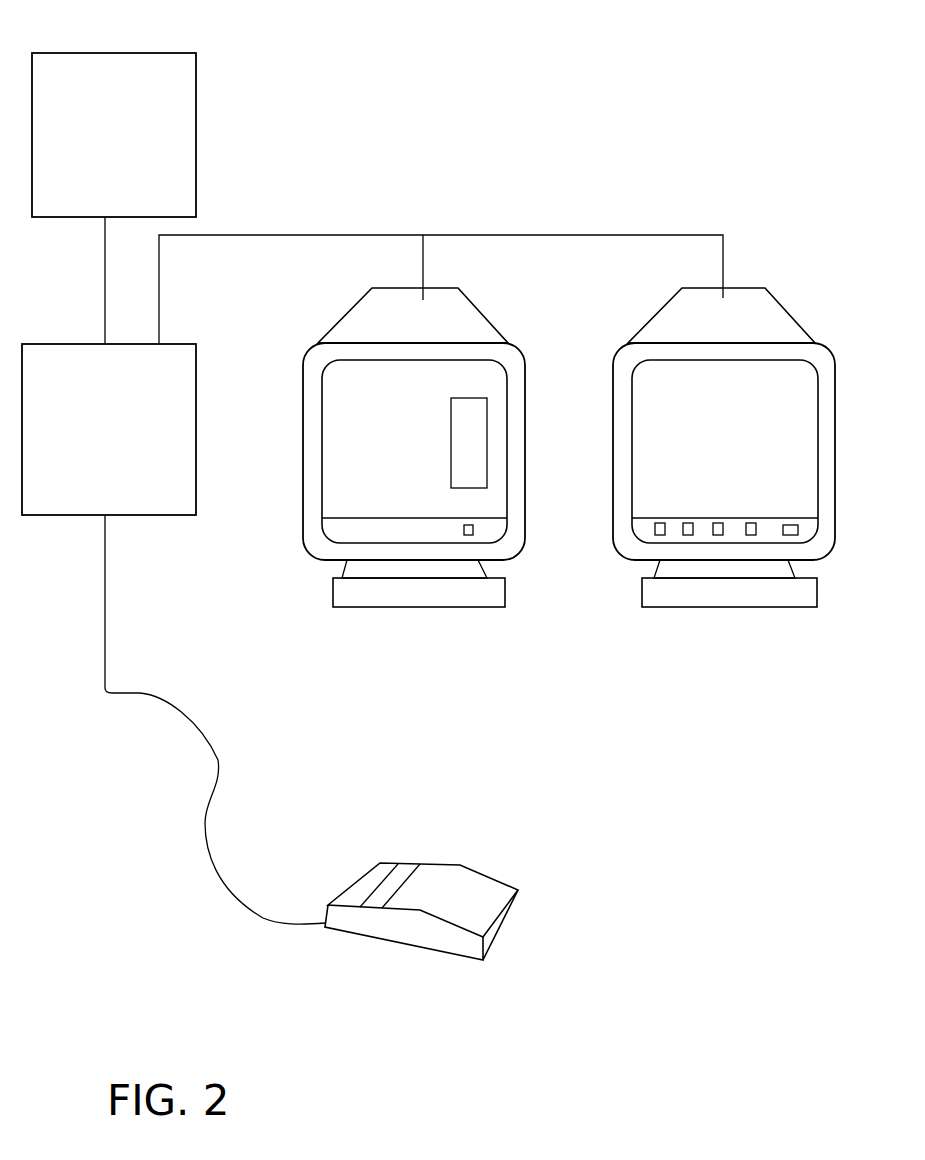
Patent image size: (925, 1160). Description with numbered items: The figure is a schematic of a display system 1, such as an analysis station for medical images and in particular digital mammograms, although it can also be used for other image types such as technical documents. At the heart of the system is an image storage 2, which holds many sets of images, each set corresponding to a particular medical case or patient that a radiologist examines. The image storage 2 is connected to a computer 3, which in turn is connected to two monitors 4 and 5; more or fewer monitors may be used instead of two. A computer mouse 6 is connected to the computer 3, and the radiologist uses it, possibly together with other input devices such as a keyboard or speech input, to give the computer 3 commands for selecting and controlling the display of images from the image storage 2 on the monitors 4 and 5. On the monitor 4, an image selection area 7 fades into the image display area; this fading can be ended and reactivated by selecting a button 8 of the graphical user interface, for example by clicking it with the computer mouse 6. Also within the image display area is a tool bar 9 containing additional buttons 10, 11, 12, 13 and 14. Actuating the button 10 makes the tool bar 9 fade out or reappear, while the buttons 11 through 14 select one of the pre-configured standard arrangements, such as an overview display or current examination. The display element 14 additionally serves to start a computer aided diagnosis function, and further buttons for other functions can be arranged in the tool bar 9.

The display system 1 is at (683, 112).
The image storage 2 is at (96, 52).
The computer 3 is at (132, 516).
The monitor 4 is at (525, 439).
The monitor 5 is at (834, 428).
The computer mouse 6 is at (467, 865).
The image selection area 7 is at (469, 397).
The button 8 is at (462, 530).
The tool bar 9 is at (337, 516).
The button 10 is at (660, 522).
The button 11 is at (688, 522).
The button 12 is at (718, 522).
The button 13 is at (750, 522).
The display element 14 is at (797, 527).